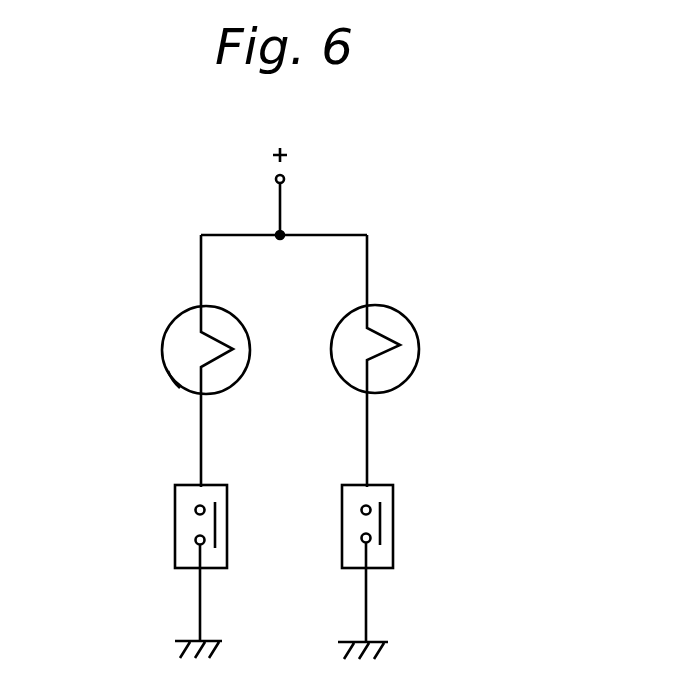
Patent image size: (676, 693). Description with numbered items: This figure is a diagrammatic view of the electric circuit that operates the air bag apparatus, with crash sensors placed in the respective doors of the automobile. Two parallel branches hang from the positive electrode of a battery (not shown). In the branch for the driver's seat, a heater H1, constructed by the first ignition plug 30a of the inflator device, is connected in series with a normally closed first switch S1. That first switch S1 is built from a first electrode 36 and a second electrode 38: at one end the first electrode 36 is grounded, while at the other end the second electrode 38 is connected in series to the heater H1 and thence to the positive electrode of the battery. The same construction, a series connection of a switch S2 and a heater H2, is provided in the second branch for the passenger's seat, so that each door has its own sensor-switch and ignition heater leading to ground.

The heater H1 is at (176, 348).
The heater H2 is at (398, 318).
The ignition plug 30a is at (168, 371).
The first switch S1 is at (175, 530).
The switch S2 is at (393, 537).
The second electrode 38 is at (196, 506).
The first electrode 36 is at (197, 545).